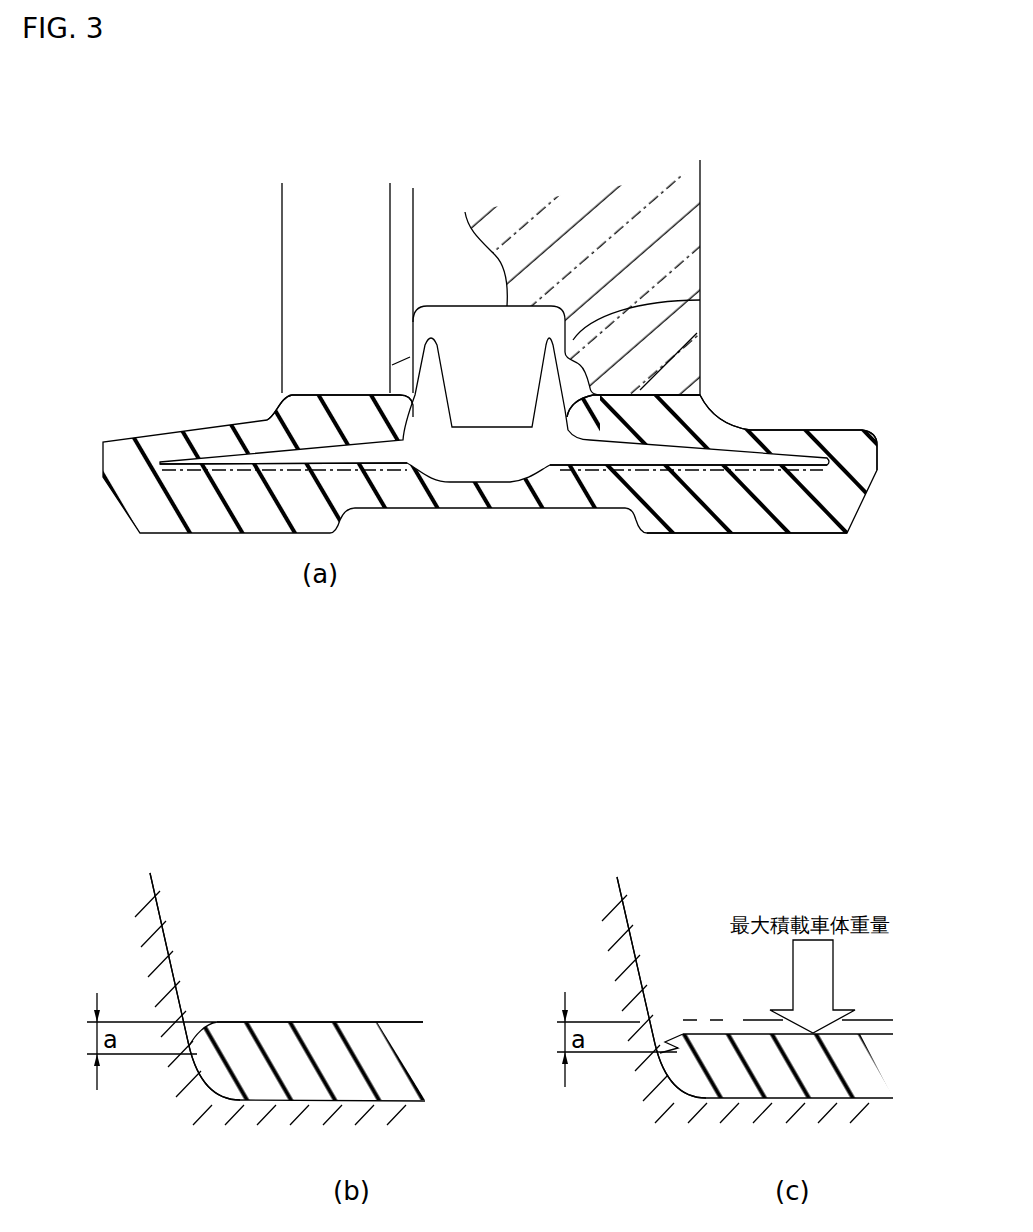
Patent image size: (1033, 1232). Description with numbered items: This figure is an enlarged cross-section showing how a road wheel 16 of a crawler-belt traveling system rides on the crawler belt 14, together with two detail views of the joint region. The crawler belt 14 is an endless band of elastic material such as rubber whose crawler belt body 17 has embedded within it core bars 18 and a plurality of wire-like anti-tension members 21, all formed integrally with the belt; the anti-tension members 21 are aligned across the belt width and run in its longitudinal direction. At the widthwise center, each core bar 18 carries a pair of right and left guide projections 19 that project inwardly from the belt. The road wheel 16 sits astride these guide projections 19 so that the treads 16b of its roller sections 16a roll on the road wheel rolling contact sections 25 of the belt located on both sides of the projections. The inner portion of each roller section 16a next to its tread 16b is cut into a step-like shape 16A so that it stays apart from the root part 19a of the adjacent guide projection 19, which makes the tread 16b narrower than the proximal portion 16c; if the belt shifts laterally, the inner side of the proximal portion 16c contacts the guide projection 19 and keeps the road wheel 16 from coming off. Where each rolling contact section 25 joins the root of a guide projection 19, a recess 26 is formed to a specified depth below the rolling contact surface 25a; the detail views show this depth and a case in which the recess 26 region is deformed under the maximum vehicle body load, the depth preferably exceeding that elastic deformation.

The crawler belt 14 is at (811, 547).
The road wheel 16 is at (677, 188).
The roller section 16a is at (303, 263).
The tread 16b is at (307, 390).
The proximal portion 16c is at (700, 300).
The step-like shape 16A is at (570, 380).
The crawler belt body 17 is at (788, 438).
The core bar 18 is at (634, 460).
The guide projection 19 is at (430, 353).
The root part 19a is at (177, 993).
The anti-tension member 21 is at (722, 465).
The road wheel rolling contact section 25 is at (347, 403).
The rolling contact surface 25a is at (317, 1020).
The recess 26 is at (198, 1033).